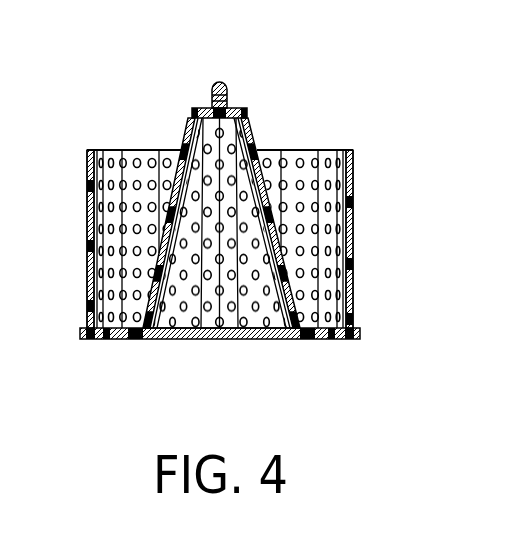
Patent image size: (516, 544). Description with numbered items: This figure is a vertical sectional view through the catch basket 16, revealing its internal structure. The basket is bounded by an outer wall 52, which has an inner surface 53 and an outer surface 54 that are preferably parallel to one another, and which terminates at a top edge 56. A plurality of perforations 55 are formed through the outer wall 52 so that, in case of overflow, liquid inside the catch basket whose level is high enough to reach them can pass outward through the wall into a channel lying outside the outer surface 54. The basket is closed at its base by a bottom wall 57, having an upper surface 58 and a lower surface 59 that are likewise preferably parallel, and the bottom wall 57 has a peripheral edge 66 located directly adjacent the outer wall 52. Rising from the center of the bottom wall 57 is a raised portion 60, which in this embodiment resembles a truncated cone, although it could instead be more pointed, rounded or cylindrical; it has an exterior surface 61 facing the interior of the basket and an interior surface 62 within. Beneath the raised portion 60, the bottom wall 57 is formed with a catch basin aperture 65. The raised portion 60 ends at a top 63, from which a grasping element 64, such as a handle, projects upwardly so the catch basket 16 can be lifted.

The catch basket 16 is at (375, 108).
The outer wall 52 is at (361, 252).
The inner surface 53 is at (326, 170).
The outer surface 54 is at (355, 203).
The perforations 55 is at (86, 193).
The top edge 56 is at (90, 150).
The bottom wall 57 is at (114, 341).
The upper surface 58 is at (322, 327).
The lower surface 59 is at (93, 341).
The raised portion 60 is at (182, 129).
The exterior surface 61 is at (254, 134).
The interior surface 62 is at (155, 283).
The top 63 is at (228, 88).
The grasping element 64 is at (212, 88).
The catch basin aperture 65 is at (241, 341).
The peripheral edge 66 is at (360, 332).